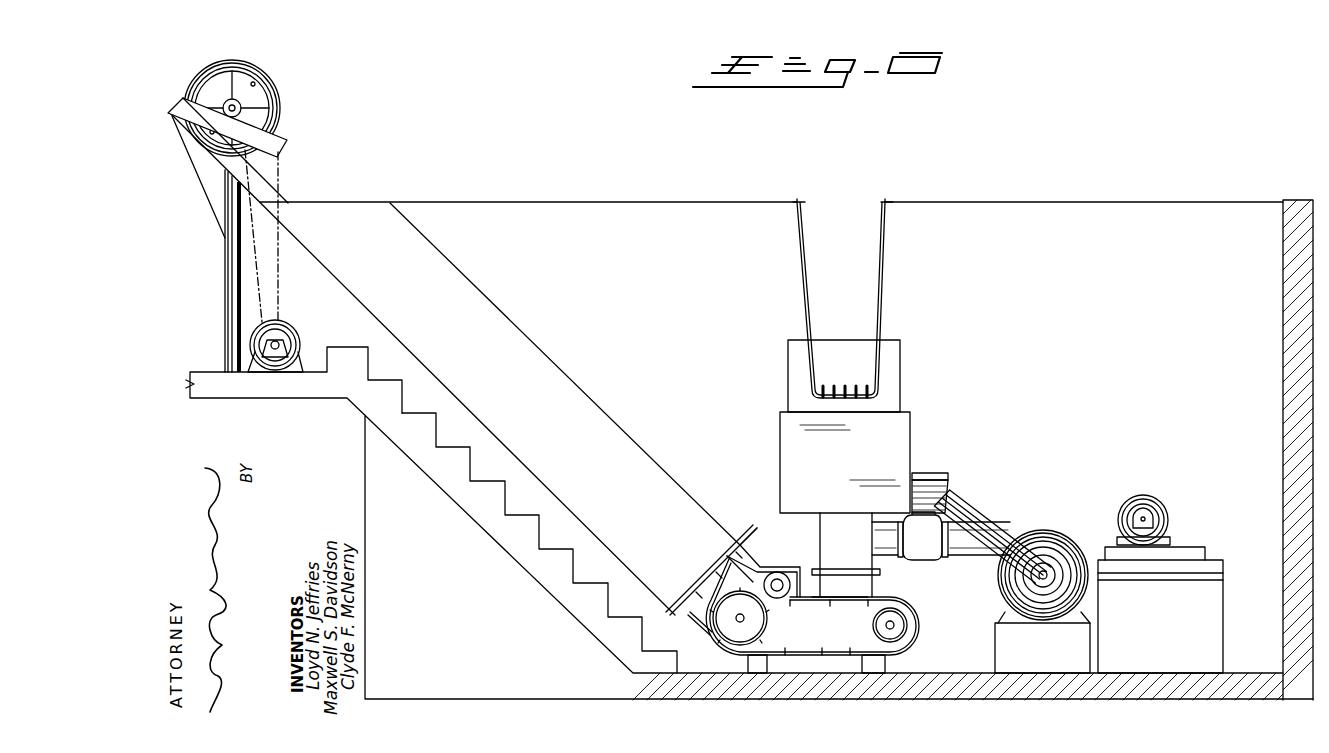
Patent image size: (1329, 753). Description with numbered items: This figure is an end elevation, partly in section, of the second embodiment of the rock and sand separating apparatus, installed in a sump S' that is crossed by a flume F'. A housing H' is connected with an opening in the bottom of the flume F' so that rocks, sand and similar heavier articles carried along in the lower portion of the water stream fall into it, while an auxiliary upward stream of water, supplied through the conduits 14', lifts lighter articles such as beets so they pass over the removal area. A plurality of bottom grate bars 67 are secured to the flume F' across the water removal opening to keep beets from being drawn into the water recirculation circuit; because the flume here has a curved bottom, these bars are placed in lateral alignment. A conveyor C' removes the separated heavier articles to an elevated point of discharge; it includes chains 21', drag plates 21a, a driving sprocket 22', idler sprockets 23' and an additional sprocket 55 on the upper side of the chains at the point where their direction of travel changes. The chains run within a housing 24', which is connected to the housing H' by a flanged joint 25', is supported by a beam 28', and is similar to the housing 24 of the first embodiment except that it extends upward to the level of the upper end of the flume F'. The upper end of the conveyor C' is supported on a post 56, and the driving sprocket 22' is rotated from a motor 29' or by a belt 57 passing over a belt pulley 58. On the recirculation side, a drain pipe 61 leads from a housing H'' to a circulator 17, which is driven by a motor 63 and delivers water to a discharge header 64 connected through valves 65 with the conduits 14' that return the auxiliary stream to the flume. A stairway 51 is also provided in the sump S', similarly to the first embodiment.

The belt pulley 58 is at (262, 70).
The driving sprocket 22' is at (258, 108).
The chains 21' is at (644, 407).
The beam 28' is at (245, 150).
The belt 57 is at (222, 218).
The post 56 is at (232, 285).
The motor 29' is at (290, 261).
The conveyor C' is at (485, 364).
The housing 24 is at (670, 474).
The stairs 51 is at (540, 535).
The flume F' is at (866, 298).
The bottom grate bars 67 is at (836, 383).
The housing H'' is at (873, 426).
The housing H' is at (820, 555).
The additional sprocket 55 is at (787, 573).
The pipe 14' is at (941, 551).
The valves 65 is at (943, 558).
The flanged joint 25' is at (876, 582).
The drag plates 21a is at (867, 605).
The idler sprockets 23' is at (808, 616).
The housing 24' is at (854, 650).
The circulator 17 is at (998, 590).
The drain pipe 61 is at (963, 496).
The discharge header 64 is at (1012, 525).
The motor 63 is at (1163, 506).
The sump S' is at (1231, 435).